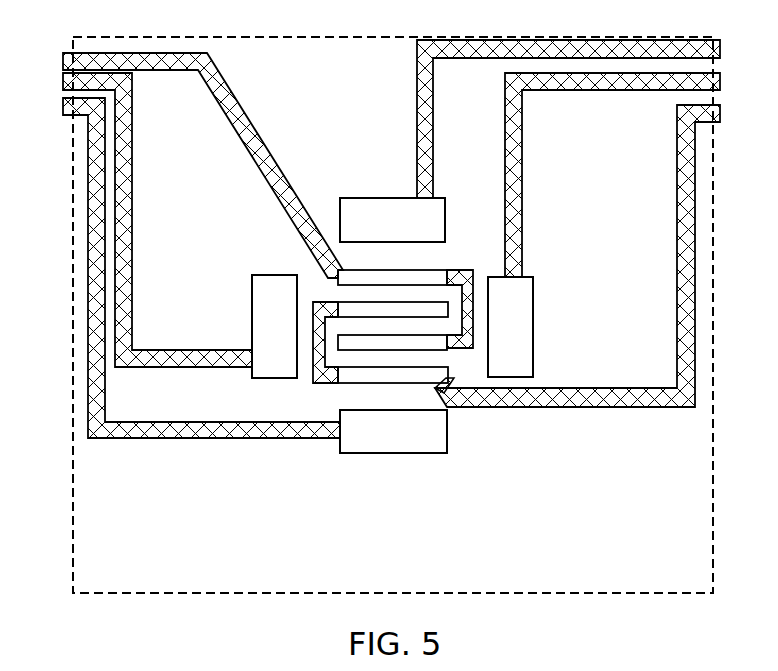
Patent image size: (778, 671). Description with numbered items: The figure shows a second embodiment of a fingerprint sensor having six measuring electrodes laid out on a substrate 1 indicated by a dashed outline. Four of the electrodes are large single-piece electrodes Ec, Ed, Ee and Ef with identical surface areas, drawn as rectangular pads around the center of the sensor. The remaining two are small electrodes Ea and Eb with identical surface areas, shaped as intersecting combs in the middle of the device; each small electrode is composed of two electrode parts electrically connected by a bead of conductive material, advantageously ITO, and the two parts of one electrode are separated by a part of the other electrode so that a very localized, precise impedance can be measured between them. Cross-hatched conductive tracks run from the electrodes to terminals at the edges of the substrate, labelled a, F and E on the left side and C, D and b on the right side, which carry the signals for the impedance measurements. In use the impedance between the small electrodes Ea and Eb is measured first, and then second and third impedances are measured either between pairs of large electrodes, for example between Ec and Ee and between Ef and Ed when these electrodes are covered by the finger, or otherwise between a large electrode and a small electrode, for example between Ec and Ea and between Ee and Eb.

The substrate 1 is at (638, 193).
The terminal a is at (192, 164).
The terminal b is at (595, 255).
The terminal C is at (586, 119).
The finger D is at (630, 175).
The terminal E is at (190, 268).
The terminal F is at (146, 220).
The small electrode Ea is at (465, 270).
The small electrode Eb is at (317, 380).
The large electrode Ec is at (392, 220).
The large electrode Ed is at (510, 327).
The large electrode Ee is at (393, 431).
The large electrode Ef is at (274, 326).